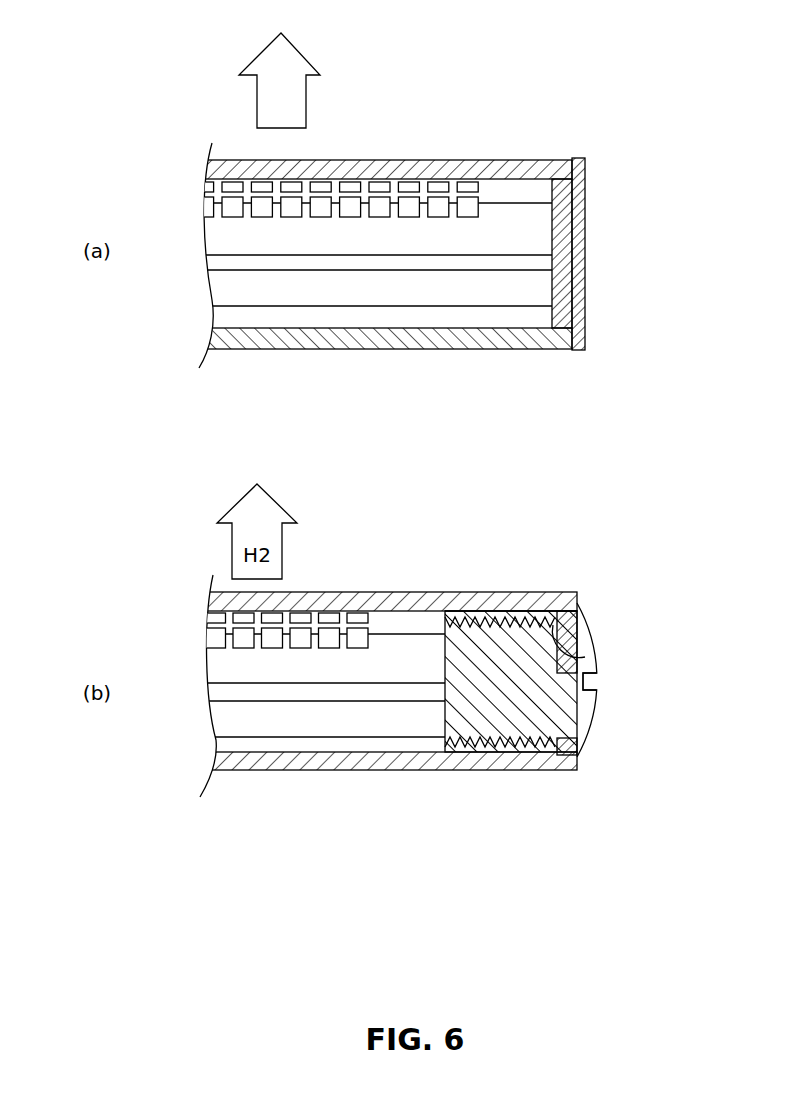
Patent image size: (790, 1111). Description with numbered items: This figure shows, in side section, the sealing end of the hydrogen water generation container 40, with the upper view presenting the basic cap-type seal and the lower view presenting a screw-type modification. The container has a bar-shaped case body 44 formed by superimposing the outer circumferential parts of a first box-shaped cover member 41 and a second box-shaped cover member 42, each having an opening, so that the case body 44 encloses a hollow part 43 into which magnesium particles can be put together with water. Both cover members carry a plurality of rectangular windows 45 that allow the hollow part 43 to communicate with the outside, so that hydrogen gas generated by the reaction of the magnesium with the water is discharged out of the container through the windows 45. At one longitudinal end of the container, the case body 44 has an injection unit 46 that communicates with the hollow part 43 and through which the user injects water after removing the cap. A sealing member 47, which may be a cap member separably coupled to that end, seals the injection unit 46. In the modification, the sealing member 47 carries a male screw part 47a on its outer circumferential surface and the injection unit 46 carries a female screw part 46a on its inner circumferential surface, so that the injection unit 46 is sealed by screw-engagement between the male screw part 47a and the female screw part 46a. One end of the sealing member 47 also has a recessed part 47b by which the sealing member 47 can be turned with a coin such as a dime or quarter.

The hydrogen water generation container 40 is at (197, 103).
The first box-shaped cover member 41 is at (497, 170).
The second box-shaped cover member 42 is at (498, 340).
The hollow part 43 is at (317, 283).
The case body 44 is at (564, 137).
The rectangular windows 45 is at (408, 186).
The injection unit 46 is at (560, 183).
The female screw part 46a is at (590, 652).
The sealing member 47 is at (578, 246).
The male screw part 47a is at (540, 598).
The recessed part 47b is at (596, 690).